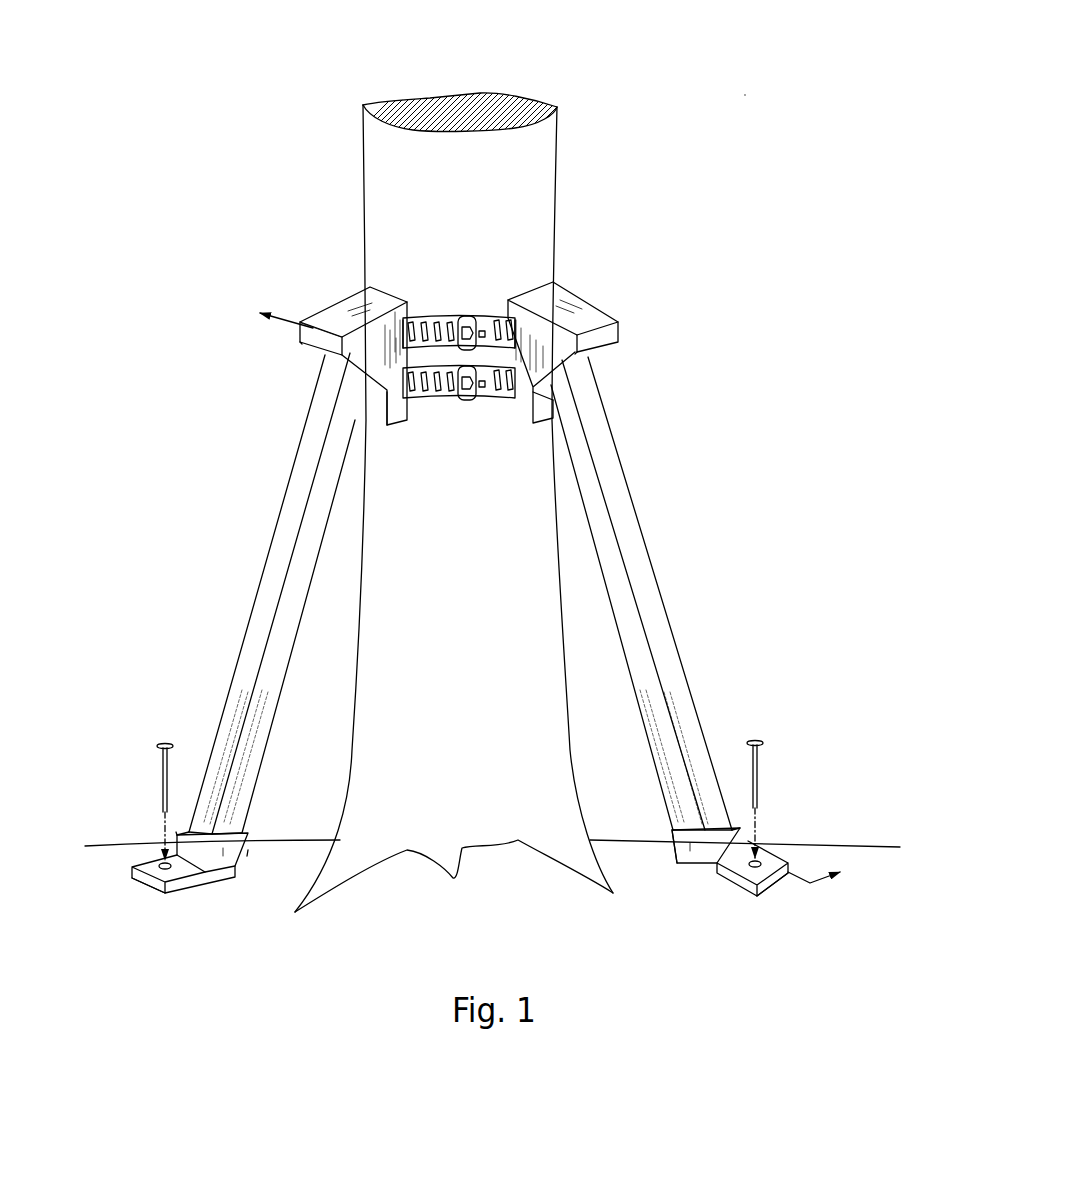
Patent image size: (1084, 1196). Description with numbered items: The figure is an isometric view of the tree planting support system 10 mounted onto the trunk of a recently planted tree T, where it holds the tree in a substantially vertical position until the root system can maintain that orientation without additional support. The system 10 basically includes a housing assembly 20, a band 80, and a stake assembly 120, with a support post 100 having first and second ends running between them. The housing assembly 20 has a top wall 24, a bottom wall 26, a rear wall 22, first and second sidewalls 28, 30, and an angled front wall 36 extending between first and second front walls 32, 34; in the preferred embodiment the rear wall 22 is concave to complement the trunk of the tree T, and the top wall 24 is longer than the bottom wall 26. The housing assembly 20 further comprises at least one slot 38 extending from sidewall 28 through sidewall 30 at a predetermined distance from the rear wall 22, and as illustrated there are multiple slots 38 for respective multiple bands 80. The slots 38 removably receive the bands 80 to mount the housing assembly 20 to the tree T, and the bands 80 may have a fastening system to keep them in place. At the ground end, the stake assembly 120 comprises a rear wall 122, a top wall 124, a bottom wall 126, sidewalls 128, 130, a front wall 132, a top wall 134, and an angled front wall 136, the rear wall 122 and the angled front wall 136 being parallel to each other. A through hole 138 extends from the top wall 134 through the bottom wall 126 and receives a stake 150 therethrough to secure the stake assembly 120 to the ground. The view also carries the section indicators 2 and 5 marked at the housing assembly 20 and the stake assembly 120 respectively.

The tree planting support system 10 is at (745, 95).
The tree T is at (352, 160).
The section view indicator 2 is at (273, 309).
The section view indicator 5 is at (826, 867).
The housing assembly 20 is at (340, 291).
The rear wall 22 is at (370, 286).
The top wall 24 is at (316, 318).
The bottom wall 26 is at (390, 425).
The first sidewall 28 is at (298, 333).
The second sidewall 30 is at (600, 341).
The first front wall 32 is at (315, 340).
The second front wall 34 is at (390, 428).
The angled front wall 36 is at (303, 346).
The slot 38 is at (406, 318).
The band 80 is at (498, 355).
The support post 100 is at (259, 571).
The stake assembly 120 is at (236, 876).
The rear wall 122 is at (258, 838).
The top wall 124 is at (262, 815).
The bottom wall 126 is at (186, 888).
The sidewall 128 is at (678, 864).
The sidewall 130 is at (176, 832).
The front wall 132 is at (134, 879).
The top wall 134 is at (150, 864).
The angled front wall 136 is at (191, 826).
The through hole 138 is at (160, 800).
The stake 150 is at (160, 742).